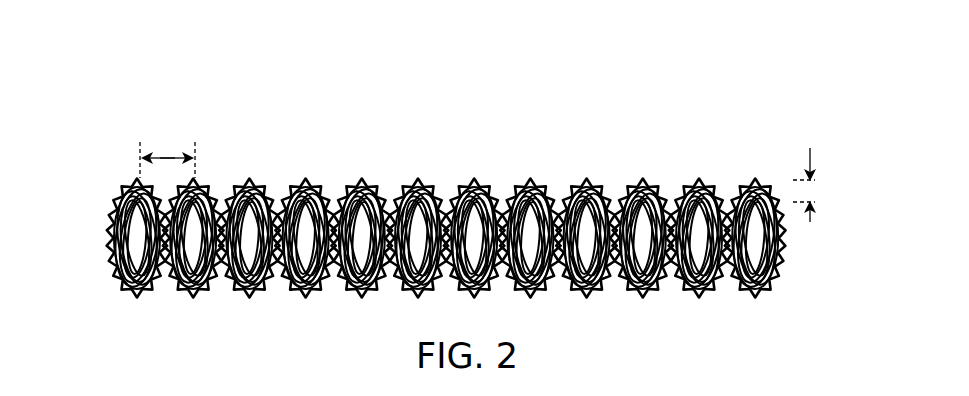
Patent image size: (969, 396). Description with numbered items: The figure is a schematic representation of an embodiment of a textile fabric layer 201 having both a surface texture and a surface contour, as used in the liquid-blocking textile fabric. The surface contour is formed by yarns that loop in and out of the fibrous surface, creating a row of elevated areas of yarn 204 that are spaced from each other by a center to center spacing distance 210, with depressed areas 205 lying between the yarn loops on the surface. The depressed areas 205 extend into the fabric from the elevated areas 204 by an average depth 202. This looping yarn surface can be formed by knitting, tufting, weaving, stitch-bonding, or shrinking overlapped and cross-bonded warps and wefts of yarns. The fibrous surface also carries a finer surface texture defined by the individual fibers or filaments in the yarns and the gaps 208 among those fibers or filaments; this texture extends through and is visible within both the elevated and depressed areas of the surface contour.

The textile fabric layer 201 is at (140, 68).
The average depth 202 is at (810, 190).
The elevated areas of yarn 204 is at (307, 168).
The depressed areas 205 is at (672, 181).
The gaps 208 is at (470, 181).
The center to center spacing distance 210 is at (169, 152).